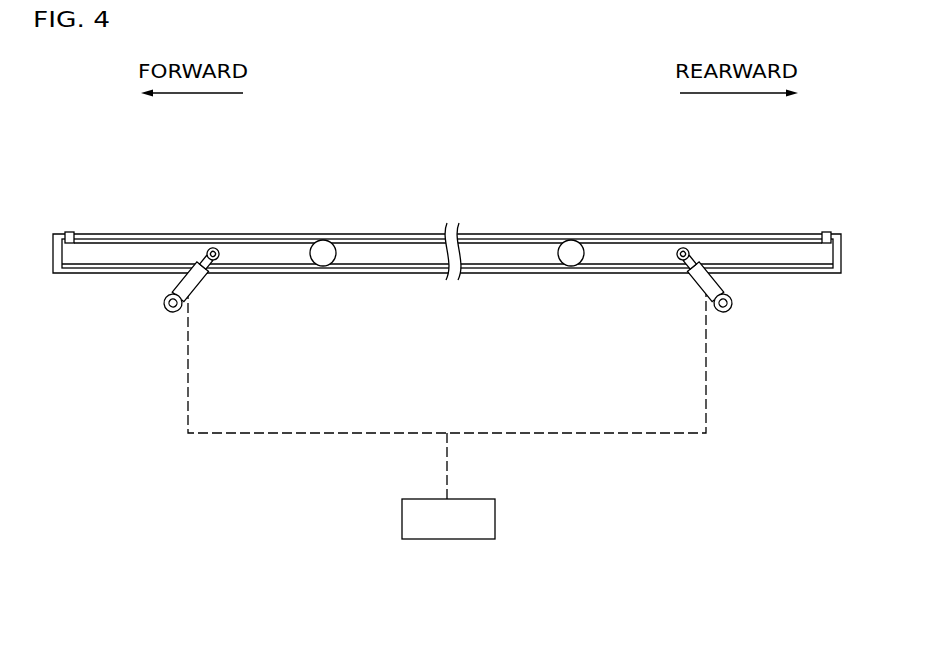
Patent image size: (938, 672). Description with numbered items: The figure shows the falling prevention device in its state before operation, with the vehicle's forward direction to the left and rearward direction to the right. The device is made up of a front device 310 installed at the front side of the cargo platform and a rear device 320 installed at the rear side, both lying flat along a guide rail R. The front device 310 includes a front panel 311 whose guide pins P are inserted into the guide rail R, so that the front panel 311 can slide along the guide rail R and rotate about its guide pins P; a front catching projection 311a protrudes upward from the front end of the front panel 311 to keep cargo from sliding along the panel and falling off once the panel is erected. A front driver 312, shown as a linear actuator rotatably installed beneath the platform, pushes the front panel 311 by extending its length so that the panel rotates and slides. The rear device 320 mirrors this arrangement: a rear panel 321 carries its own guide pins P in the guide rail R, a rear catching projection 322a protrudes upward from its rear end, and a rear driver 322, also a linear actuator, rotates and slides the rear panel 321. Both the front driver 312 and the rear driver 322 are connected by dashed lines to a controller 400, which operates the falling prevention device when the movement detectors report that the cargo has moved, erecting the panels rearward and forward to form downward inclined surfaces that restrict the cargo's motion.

The front device 310 is at (140, 300).
The front panel 311 is at (177, 250).
The front catching projection 311a is at (68, 233).
The front driver 312 is at (200, 278).
The rear device 320 is at (754, 300).
The rear panel 321 is at (717, 250).
The rear catching projection 322a is at (826, 233).
The rear driver 322 is at (694, 278).
The guide pin P is at (323, 250).
The guide rail R is at (400, 272).
The controller 400 is at (445, 540).